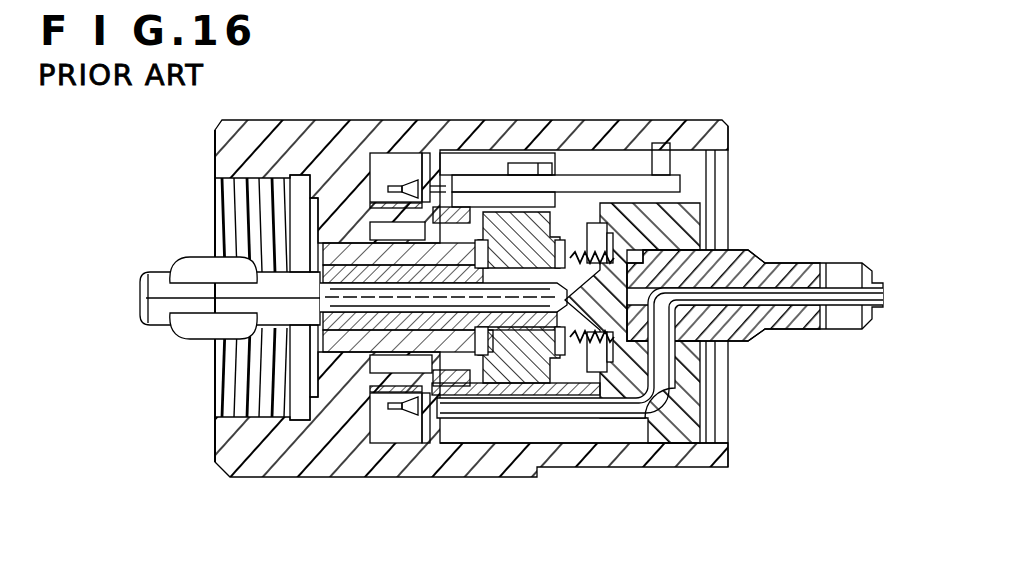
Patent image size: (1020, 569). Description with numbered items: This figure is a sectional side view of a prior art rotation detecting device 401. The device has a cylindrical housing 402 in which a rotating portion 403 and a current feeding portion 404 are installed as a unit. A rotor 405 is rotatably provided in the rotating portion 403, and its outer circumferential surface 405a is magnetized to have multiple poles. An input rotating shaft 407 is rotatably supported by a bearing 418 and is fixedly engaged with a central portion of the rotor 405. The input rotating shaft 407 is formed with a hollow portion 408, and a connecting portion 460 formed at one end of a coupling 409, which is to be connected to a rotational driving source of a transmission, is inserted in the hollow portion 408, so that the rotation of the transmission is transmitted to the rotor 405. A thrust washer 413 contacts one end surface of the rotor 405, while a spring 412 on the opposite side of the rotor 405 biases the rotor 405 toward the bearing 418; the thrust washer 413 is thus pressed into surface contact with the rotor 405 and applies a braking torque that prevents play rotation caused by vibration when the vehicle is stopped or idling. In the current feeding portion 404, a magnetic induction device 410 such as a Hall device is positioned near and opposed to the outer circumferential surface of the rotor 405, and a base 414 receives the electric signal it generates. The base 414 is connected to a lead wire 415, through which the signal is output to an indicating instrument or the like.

The rotation detecting device 401 is at (468, 478).
The cylindrical housing 402 is at (267, 476).
The rotating portion 403 is at (568, 222).
The current feeding portion 404 is at (482, 165).
The rotor 405 is at (522, 385).
The outer circumferential surface 405a is at (502, 210).
The input rotating shaft 407 is at (384, 325).
The hollow portion 408 is at (350, 350).
The coupling 409 is at (163, 272).
The magnetic induction device 410 is at (530, 195).
The spring 412 is at (645, 414).
The thrust washer 413 is at (577, 392).
The base 414 is at (405, 170).
The lead wire 415 is at (605, 395).
The bearing 418 is at (343, 385).
The connecting portion 460 is at (395, 287).